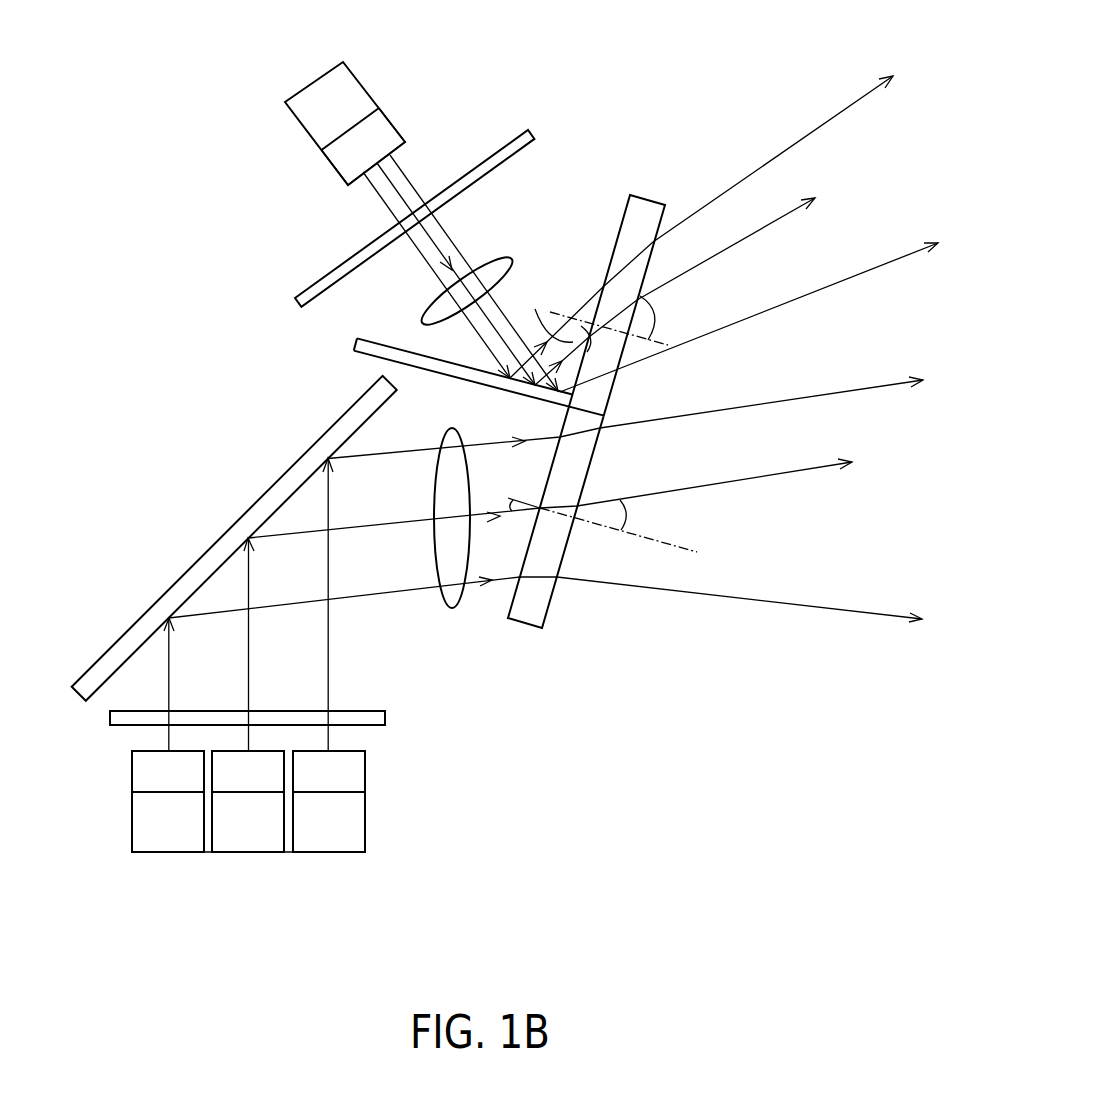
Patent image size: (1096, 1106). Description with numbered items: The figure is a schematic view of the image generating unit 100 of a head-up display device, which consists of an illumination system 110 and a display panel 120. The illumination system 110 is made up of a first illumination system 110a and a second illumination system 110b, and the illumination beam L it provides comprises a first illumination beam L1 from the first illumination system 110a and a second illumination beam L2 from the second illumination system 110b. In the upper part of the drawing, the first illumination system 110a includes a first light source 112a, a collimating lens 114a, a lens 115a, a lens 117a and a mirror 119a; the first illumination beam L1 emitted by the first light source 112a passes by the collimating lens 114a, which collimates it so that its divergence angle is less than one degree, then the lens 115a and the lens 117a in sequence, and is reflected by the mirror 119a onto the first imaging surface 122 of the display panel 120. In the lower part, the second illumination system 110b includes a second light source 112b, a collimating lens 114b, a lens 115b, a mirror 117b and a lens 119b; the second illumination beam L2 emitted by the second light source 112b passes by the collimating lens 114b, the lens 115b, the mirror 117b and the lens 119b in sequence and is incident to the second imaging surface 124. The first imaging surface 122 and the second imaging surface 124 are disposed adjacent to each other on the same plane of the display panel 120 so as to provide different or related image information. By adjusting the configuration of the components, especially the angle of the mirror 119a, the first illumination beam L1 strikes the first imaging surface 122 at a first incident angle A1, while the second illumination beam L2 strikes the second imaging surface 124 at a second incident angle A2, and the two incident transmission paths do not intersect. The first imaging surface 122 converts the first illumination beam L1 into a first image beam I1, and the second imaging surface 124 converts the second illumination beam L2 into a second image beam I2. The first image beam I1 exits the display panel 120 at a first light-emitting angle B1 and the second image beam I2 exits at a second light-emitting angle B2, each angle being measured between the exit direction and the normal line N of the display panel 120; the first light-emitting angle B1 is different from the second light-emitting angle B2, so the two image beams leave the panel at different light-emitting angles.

The image generating unit 100 is at (483, 484).
The illumination system 110 is at (336, 452).
The first illumination system 110a is at (294, 119).
The second illumination system 110b is at (336, 801).
The first light source 112a is at (340, 97).
The collimating lens 114a is at (398, 142).
The lens 115a is at (531, 131).
The lens 117a is at (490, 270).
The mirror 119a is at (355, 345).
The second light source 112b is at (151, 827).
The collimating lens 114b is at (151, 776).
The lens 115b is at (128, 717).
The mirror 117b is at (280, 488).
The lens 119b is at (445, 603).
The display panel 120 is at (614, 417).
The first imaging surface 122 is at (643, 208).
The second imaging surface 124 is at (537, 607).
The first illumination beam L1 is at (440, 256).
The second illumination beam L2 is at (249, 669).
The illumination beam L is at (551, 413).
The first image beam I1 is at (869, 164).
The second image beam I2 is at (880, 499).
The normal line N is at (553, 313).
The first incident angle A1 is at (545, 307).
The second incident angle A2 is at (514, 507).
The first light-emitting angle B1 is at (637, 324).
The second light-emitting angle B2 is at (644, 516).